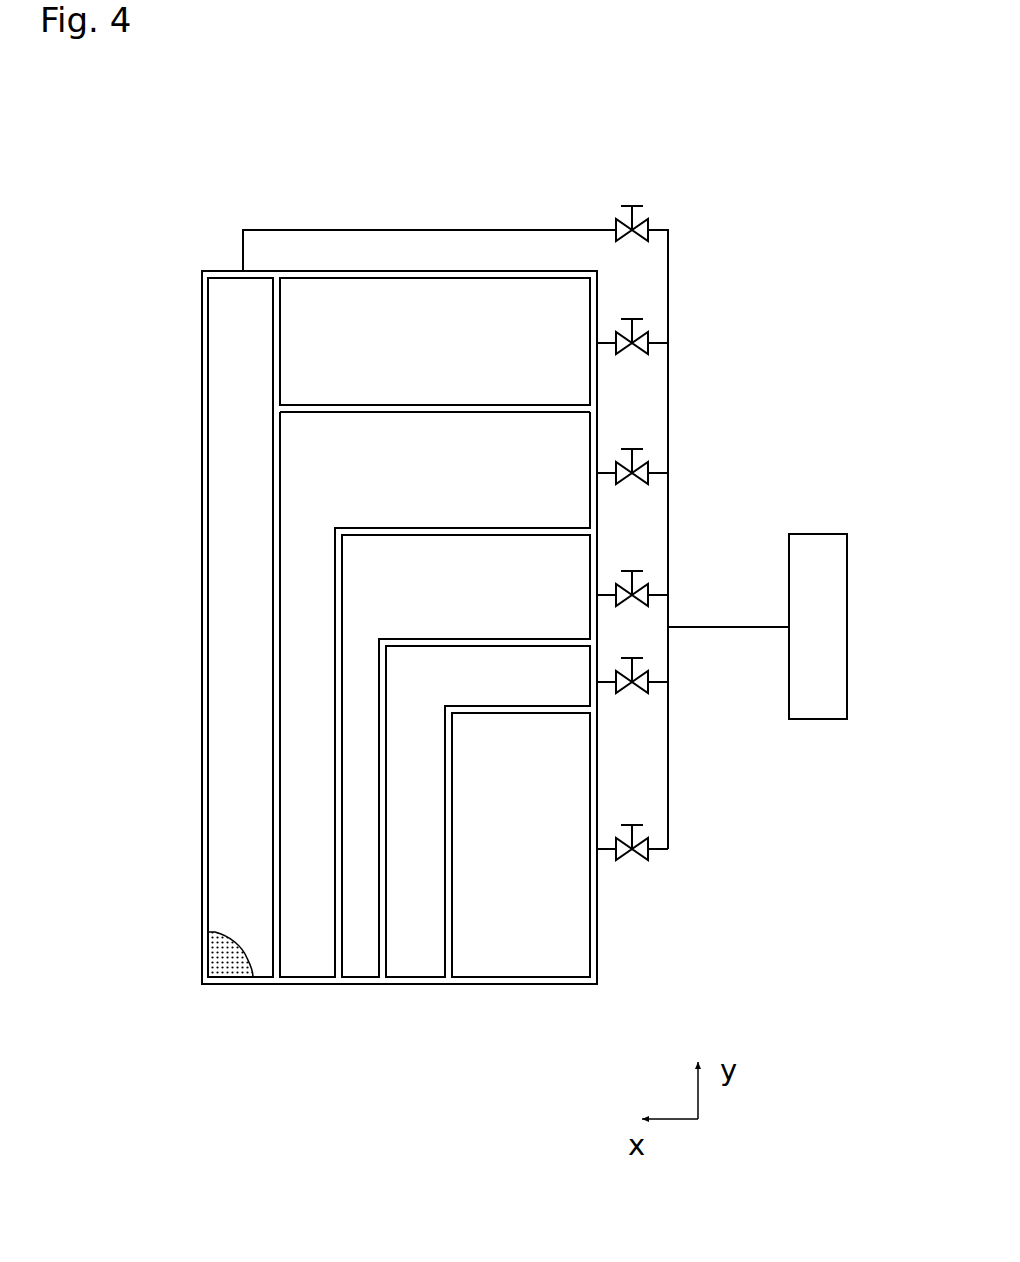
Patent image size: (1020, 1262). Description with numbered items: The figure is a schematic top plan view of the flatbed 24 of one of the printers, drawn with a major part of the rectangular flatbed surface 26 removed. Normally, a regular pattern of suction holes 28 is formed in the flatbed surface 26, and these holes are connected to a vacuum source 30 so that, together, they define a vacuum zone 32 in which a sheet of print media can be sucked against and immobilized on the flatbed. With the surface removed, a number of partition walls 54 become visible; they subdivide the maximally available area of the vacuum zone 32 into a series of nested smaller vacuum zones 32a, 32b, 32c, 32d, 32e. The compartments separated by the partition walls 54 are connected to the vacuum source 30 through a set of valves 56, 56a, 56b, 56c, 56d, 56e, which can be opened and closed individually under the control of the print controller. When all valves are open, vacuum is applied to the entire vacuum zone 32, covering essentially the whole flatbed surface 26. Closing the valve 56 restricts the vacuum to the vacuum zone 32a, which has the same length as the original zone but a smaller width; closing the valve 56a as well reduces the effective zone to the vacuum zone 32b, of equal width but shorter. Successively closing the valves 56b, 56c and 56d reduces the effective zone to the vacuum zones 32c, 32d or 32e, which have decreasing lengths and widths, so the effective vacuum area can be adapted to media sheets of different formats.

The flatbed 24 is at (199, 428).
The flatbed surface 26 is at (242, 984).
The suction holes 28 is at (212, 952).
The vacuum source 30 is at (804, 541).
The vacuum zone 32 is at (226, 342).
The vacuum zone 32a is at (547, 352).
The vacuum zone 32b is at (547, 490).
The vacuum zone 32c is at (547, 612).
The vacuum zone 32d is at (547, 697).
The vacuum zone 32e is at (547, 864).
The partition walls 54 is at (398, 407).
The valve 56 is at (648, 229).
The valve 56a is at (648, 343).
The valve 56b is at (648, 473).
The valve 56c is at (648, 595).
The valve 56d is at (648, 682).
The valve 56e is at (648, 849).